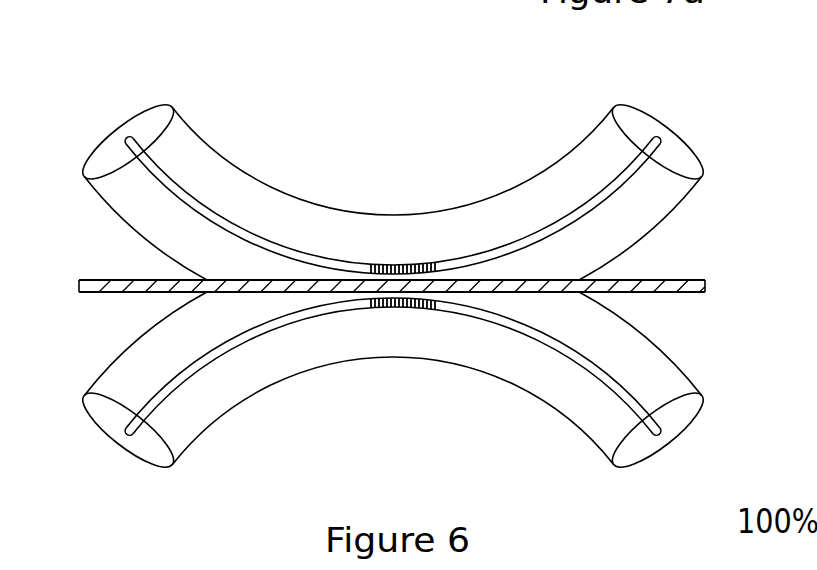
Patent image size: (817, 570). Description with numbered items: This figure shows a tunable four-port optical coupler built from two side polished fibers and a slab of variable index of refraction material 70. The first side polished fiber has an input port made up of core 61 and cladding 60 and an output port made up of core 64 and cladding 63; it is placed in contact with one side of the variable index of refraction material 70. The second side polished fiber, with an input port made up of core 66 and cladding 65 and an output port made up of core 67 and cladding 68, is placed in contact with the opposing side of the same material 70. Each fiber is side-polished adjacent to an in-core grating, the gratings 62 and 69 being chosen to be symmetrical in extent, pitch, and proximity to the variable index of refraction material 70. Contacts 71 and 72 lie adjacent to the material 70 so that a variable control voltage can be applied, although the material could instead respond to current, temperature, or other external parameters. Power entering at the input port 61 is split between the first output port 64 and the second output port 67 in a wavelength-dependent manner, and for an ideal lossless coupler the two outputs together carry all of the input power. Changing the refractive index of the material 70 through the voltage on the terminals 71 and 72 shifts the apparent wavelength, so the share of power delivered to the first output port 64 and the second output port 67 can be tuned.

The cladding 60 is at (170, 102).
The core 61 is at (132, 141).
The in-core grating 62 is at (415, 262).
The cladding 63 is at (650, 112).
The core 64 is at (658, 143).
The cladding 65 is at (88, 418).
The core 66 is at (128, 431).
The core 67 is at (660, 435).
The cladding 68 is at (648, 460).
The in-core grating 69 is at (412, 310).
The variable index of refraction material 70 is at (710, 286).
The contact 71 is at (678, 273).
The contact 72 is at (687, 297).